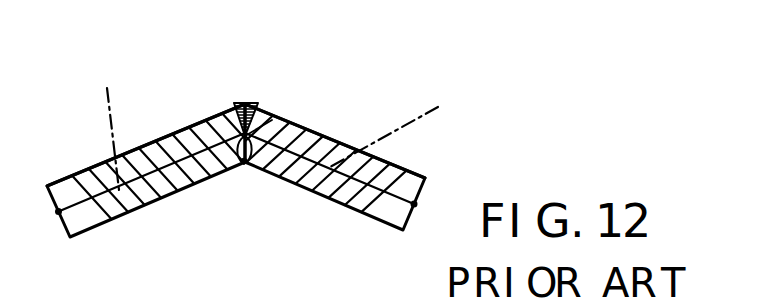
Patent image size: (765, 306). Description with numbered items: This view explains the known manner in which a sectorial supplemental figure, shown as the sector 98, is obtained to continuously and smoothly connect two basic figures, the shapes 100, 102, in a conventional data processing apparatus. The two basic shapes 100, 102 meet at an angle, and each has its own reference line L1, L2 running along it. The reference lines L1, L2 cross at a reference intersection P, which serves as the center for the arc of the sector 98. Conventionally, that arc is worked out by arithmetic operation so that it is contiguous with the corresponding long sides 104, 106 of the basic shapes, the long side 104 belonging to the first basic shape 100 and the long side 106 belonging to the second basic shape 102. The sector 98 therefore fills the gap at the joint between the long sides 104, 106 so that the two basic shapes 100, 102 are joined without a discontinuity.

The sectorial supplemental figure 98 is at (248, 102).
The basic figure 100 is at (108, 210).
The basic figure 102 is at (367, 202).
The long side 104 is at (174, 130).
The long side 106 is at (343, 136).
The reference intersection P is at (250, 128).
The reference line L1 is at (111, 129).
The reference line L2 is at (399, 126).